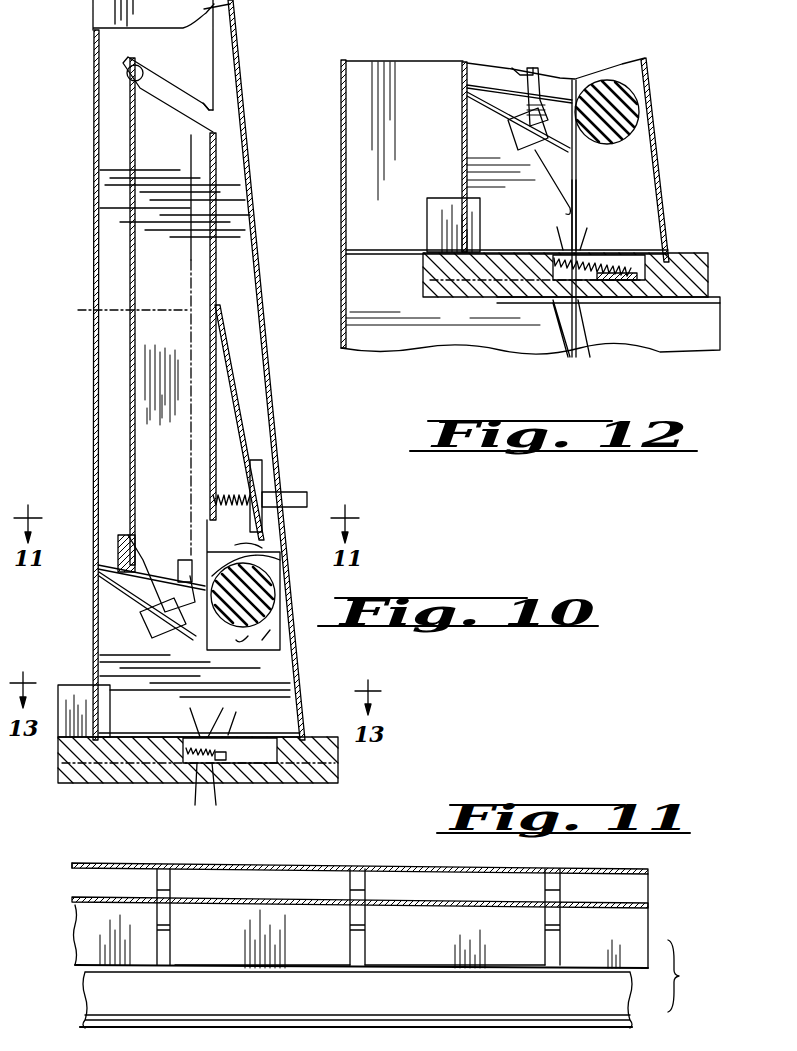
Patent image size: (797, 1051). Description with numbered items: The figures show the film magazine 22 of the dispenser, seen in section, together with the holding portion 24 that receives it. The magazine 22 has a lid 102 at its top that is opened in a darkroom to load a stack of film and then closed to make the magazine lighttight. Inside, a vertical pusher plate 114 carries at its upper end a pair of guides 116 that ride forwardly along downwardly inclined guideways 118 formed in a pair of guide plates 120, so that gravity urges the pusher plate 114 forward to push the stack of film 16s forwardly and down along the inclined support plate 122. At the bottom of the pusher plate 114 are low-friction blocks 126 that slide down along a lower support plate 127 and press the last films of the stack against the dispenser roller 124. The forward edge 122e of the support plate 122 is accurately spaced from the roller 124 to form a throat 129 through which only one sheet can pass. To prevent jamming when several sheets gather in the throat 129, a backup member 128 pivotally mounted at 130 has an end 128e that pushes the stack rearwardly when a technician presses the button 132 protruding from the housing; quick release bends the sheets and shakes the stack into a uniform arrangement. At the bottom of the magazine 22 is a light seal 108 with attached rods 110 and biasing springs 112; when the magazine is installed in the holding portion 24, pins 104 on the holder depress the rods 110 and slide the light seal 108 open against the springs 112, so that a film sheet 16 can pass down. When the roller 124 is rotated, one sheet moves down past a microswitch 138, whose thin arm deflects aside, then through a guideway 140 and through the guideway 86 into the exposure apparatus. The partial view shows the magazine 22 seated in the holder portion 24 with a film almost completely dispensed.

In FIG. 10, the film magazine 22 is at (90, 142).
In FIG. 12, the film magazine 22 is at (652, 70).
In FIG. 11, the film magazine 22 is at (652, 895).
In FIG. 12, the holding portion 24 is at (372, 54).
In FIG. 12, the film sheet 16 is at (594, 337).
In FIG. 10, the stack of film 16s is at (143, 385).
In FIG. 12, the guideway 86 is at (566, 325).
In FIG. 10, the lid 102 is at (231, 8).
In FIG. 12, the pins 104 is at (433, 308).
In FIG. 10, the light seal 108 is at (226, 770).
In FIG. 12, the light seal 108 is at (634, 290).
In FIG. 10, the rods 110 is at (140, 773).
In FIG. 12, the rods 110 is at (483, 308).
In FIG. 10, the springs 112 is at (188, 745).
In FIG. 12, the springs 112 is at (604, 256).
In FIG. 10, the pusher plate 114 is at (133, 298).
In FIG. 12, the pusher plate 114 is at (548, 78).
In FIG. 11, the pusher plate 114 is at (285, 905).
In FIG. 10, the guides 116 is at (126, 73).
In FIG. 10, the guideways 118 is at (213, 108).
In FIG. 10, the guide plates 120 is at (205, 64).
In FIG. 10, the support plate 122 is at (100, 545).
In FIG. 12, the support plate 122 is at (478, 80).
In FIG. 11, the support plate 122 is at (390, 885).
In FIG. 10, the forward edge of support plate 122e is at (205, 560).
In FIG. 12, the forward edge of support plate 122e is at (577, 80).
In FIG. 11, the forward edge of support plate 122e is at (255, 965).
In FIG. 10, the dispenser roller 124 is at (278, 590).
In FIG. 12, the dispenser roller 124 is at (628, 104).
In FIG. 11, the dispenser roller 124 is at (422, 1003).
In FIG. 10, the blocks 126 is at (118, 591).
In FIG. 12, the blocks 126 is at (520, 75).
In FIG. 11, the blocks 126 is at (160, 890).
In FIG. 10, the lower support plate 127 is at (135, 600).
In FIG. 11, the lower support plate 127 is at (165, 955).
In FIG. 10, the backup member 128 is at (196, 503).
In FIG. 10, the end of backup member 128e is at (240, 545).
In FIG. 10, the throat 129 is at (270, 558).
In FIG. 11, the throat 129 is at (520, 968).
In FIG. 10, the pivot 130 is at (221, 305).
In FIG. 10, the button 132 is at (294, 492).
In FIG. 10, the microswitch 138 is at (160, 628).
In FIG. 12, the microswitch 138 is at (512, 140).
In FIG. 10, the guideway 140 is at (232, 712).
In FIG. 12, the guideway 140 is at (582, 232).